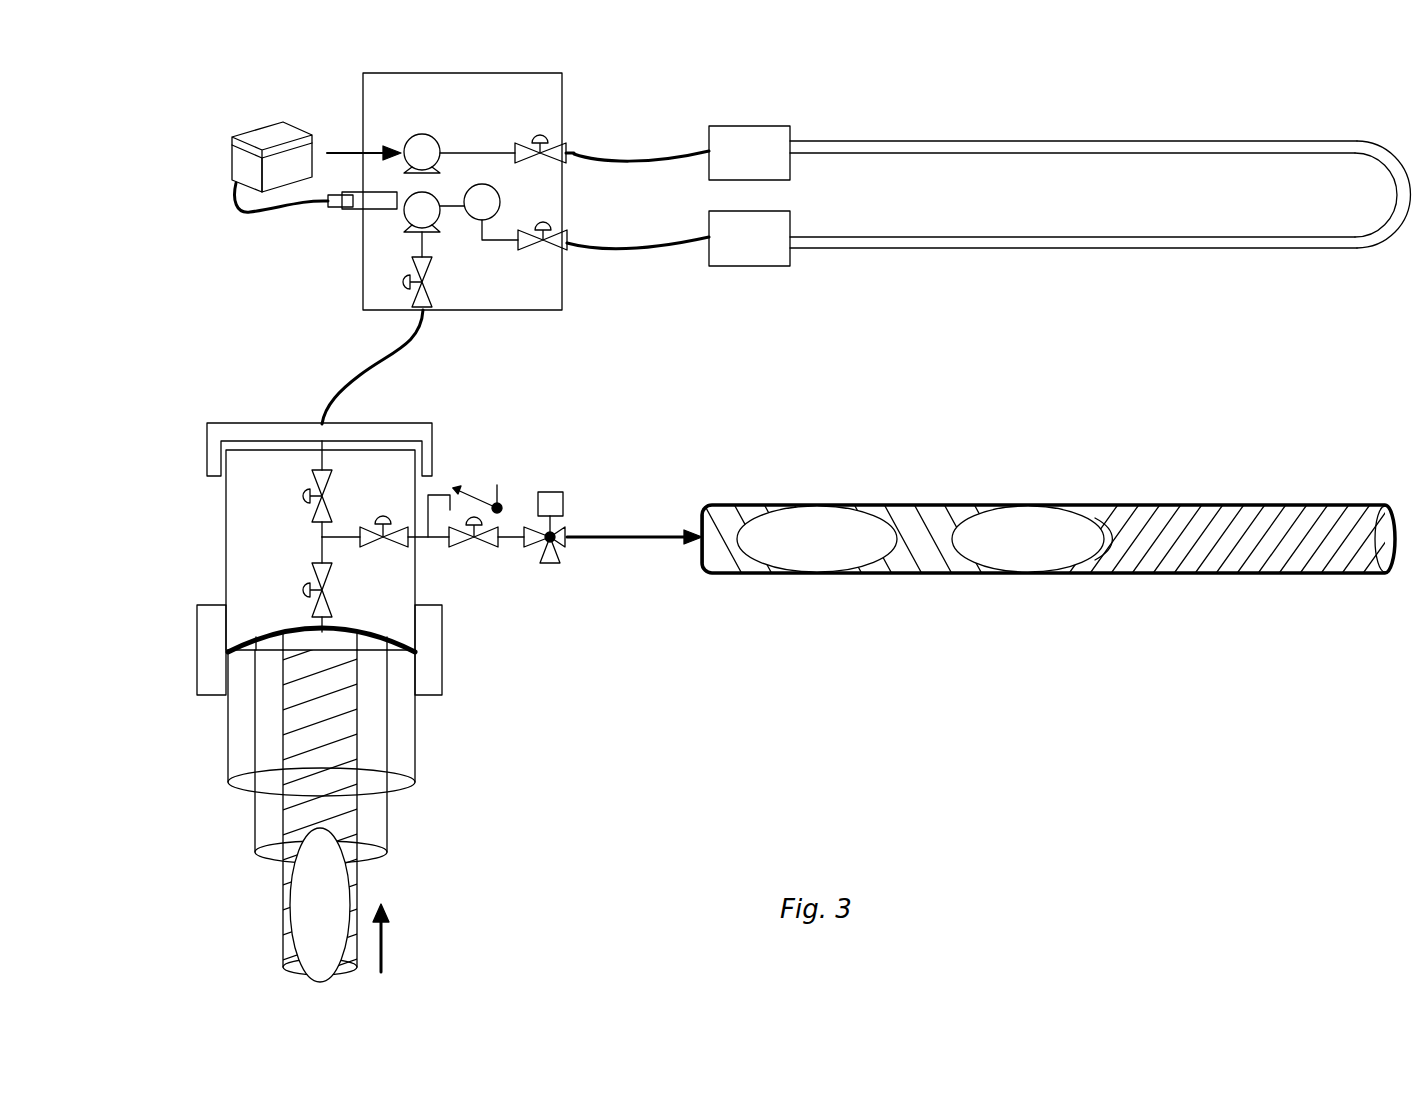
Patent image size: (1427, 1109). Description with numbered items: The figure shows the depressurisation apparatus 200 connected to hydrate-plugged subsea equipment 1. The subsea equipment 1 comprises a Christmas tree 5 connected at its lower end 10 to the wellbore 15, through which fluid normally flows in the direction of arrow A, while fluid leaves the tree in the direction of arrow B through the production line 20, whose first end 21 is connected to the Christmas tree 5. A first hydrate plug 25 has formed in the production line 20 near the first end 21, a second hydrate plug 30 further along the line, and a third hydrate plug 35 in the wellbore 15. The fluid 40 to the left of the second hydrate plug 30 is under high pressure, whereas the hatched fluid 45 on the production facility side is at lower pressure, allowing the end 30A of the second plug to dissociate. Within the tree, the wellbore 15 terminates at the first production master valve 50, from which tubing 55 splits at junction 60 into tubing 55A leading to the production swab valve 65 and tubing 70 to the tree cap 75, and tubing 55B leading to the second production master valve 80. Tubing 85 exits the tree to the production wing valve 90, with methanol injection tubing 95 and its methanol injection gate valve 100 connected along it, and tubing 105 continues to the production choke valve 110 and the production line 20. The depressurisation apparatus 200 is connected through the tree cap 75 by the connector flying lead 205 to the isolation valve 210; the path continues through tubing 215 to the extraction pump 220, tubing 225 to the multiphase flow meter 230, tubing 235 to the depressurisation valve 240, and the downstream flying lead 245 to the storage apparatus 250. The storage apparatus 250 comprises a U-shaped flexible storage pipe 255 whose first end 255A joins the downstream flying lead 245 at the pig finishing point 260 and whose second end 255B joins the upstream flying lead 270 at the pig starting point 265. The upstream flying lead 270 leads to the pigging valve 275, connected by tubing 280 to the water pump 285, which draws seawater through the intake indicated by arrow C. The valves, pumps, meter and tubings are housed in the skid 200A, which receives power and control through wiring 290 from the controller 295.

The subsea equipment 1 is at (580, 717).
The Christmas tree 5 is at (423, 826).
The lower end 10 is at (425, 650).
The wellbore 15 is at (285, 905).
The production line 20 is at (1042, 536).
The first end 21 is at (700, 575).
The first hydrate plug 25 is at (822, 575).
The second hydrate plug 30 is at (1035, 575).
The end of second hydrate plug 30A is at (1100, 573).
The third hydrate plug 35 is at (305, 938).
The fluid 40 is at (315, 797).
The fluid 45 is at (1200, 530).
The first production master valve 50 is at (318, 603).
The tubing 55 is at (318, 548).
The tubing 55A is at (318, 527).
The tubing 55B is at (350, 590).
The junction 60 is at (318, 537).
The production swab valve 65 is at (327, 470).
The tubing 70 is at (320, 455).
The tree cap 75 is at (207, 438).
The second production master valve 80 is at (407, 530).
The tubing 85 is at (420, 540).
The production wing valve 90 is at (458, 540).
The methanol injection tubing 95 is at (438, 495).
The methanol injection gate valve 100 is at (497, 485).
The tubing 105 is at (515, 535).
The production choke valve 110 is at (565, 515).
The arrow A is at (385, 940).
The arrow B is at (612, 541).
The arrow C is at (356, 150).
The depressurisation apparatus 200 is at (740, 330).
The skid 200A is at (356, 289).
The connector flying lead 205 is at (367, 366).
The isolation valve 210 is at (424, 284).
The tubing 215 is at (413, 245).
The extraction pump 220 is at (404, 213).
The tubing 225 is at (450, 205).
The multiphase flow meter 230 is at (474, 210).
The tubing 235 is at (493, 243).
The depressurisation valve 240 is at (567, 245).
The downstream flying lead 245 is at (660, 246).
The storage apparatus 250 is at (1102, 201).
The flexible storage pipe 255 is at (1338, 141).
The first end 255A is at (820, 250).
The second end 255B is at (812, 141).
The pig finishing point 260 is at (777, 228).
The pig starting point 265 is at (755, 145).
The upstream flying lead 270 is at (668, 150).
The pigging valve 275 is at (568, 158).
The tubing 280 is at (483, 150).
The water pump 285 is at (418, 140).
The wiring 290 is at (262, 223).
The controller 295 is at (255, 128).